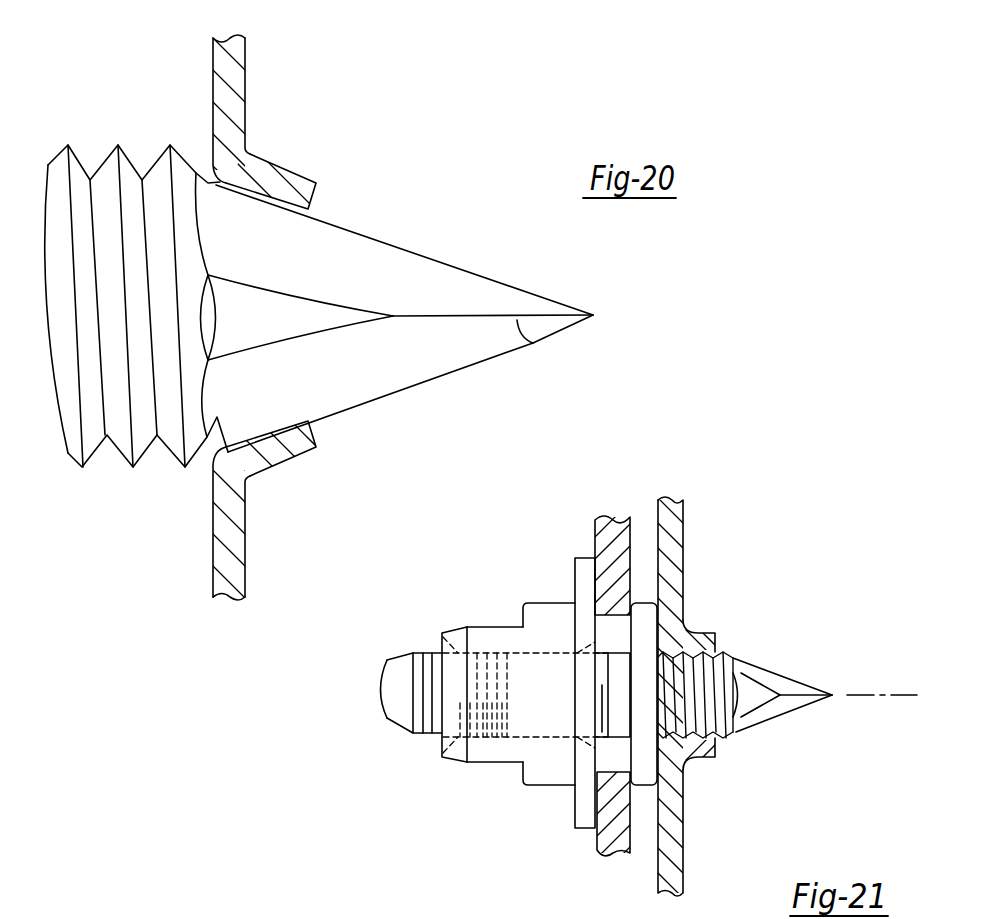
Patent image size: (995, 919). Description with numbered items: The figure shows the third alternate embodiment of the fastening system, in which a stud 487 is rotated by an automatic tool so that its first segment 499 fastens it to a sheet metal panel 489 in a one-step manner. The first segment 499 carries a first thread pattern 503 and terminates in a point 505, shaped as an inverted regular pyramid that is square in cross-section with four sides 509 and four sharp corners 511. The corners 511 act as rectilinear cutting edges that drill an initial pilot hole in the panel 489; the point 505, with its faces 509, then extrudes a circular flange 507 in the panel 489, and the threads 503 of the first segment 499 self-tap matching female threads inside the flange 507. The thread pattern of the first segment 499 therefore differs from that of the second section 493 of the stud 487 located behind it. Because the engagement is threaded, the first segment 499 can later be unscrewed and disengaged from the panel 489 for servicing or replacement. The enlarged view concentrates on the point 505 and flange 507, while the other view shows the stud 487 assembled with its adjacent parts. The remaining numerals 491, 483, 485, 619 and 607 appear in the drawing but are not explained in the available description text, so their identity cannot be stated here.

In FIG. 20, the first segment 499 is at (128, 90).
In FIG. 21, the first segment 499 is at (740, 792).
In FIG. 20, the sheet metal panel 489 is at (212, 85).
In FIG. 21, the sheet metal panel 489 is at (675, 867).
In FIG. 20, the circular flange 507 is at (292, 187).
In FIG. 21, the circular flange 507 is at (700, 757).
In FIG. 20, the sides 509 is at (393, 265).
In FIG. 20, the point 505 is at (427, 357).
In FIG. 21, the point 505 is at (773, 680).
In FIG. 20, the sharp corners 511 is at (533, 343).
In FIG. 21, the retainer plate 491 is at (640, 603).
In FIG. 21, the stud 487 is at (422, 663).
In FIG. 21, the body 483 is at (493, 638).
In FIG. 21, the second section 493 is at (438, 730).
In FIG. 21, the nut 485 is at (605, 837).
In FIG. 21, the first thread pattern 503 is at (703, 673).
In FIG. 21, the reference numeral 619 is at (298, 904).
In FIG. 21, the reference numeral 607 is at (426, 908).